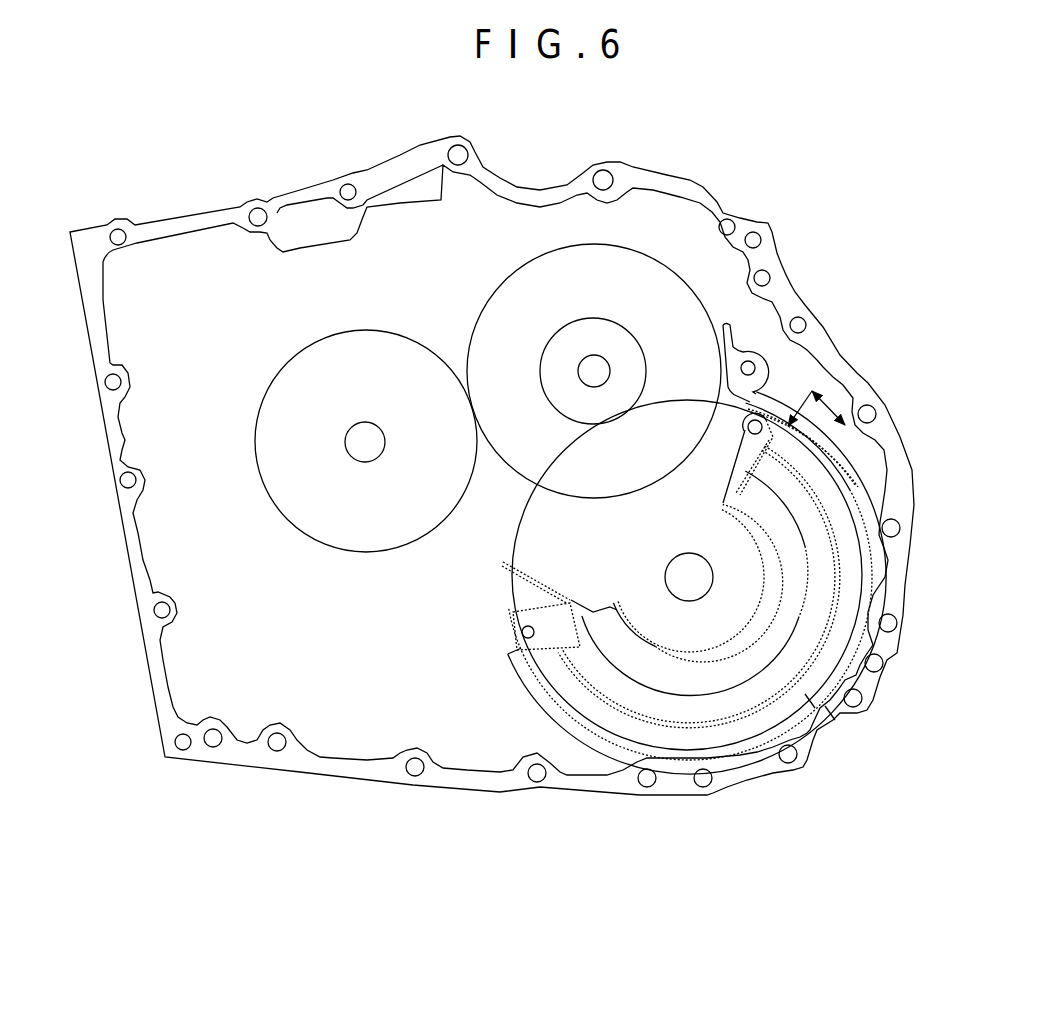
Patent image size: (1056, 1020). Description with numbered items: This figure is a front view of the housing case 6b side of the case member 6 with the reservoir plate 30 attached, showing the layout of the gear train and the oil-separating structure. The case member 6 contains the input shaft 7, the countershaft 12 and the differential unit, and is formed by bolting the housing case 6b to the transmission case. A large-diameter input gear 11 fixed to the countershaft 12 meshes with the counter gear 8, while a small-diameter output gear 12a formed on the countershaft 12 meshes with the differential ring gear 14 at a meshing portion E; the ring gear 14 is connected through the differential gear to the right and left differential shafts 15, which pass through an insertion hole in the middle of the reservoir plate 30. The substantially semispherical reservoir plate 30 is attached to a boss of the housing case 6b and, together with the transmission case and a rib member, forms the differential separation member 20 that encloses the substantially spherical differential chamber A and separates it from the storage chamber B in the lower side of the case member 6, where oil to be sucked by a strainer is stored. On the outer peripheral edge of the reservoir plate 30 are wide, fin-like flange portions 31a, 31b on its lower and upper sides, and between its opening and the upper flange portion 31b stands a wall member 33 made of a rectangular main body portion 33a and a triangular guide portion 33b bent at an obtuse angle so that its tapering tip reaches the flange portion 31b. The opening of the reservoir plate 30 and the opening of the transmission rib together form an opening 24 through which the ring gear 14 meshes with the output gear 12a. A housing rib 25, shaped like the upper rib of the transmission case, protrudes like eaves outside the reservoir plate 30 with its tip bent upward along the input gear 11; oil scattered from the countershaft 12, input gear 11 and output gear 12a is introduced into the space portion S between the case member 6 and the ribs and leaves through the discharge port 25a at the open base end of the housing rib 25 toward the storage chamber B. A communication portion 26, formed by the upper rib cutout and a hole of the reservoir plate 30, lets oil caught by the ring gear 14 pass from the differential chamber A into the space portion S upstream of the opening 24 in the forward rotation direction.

The case member 6 is at (229, 175).
The housing case 6b is at (796, 291).
The input shaft 7 is at (361, 461).
The counter gear 8 is at (264, 487).
The input gear 11 is at (496, 323).
The countershaft 12 is at (583, 380).
The output gear 12a is at (588, 320).
The differential ring gear 14 is at (547, 535).
The differential shafts 15 is at (665, 578).
The differential separation member 20 is at (482, 587).
The opening 24 is at (674, 396).
The housing rib 25 is at (763, 356).
The discharge port 25a is at (862, 479).
The communication portion 26 is at (862, 454).
The reservoir plate 30 is at (804, 700).
The flange portion 31a is at (530, 694).
The flange portion 31b is at (870, 523).
The wall member 33 is at (884, 314).
The main body portion 33a is at (816, 389).
The guide portion 33b is at (820, 390).
The differential chamber A is at (850, 583).
The storage chamber B is at (377, 689).
The meshing portion E is at (610, 418).
The space portion S is at (754, 323).